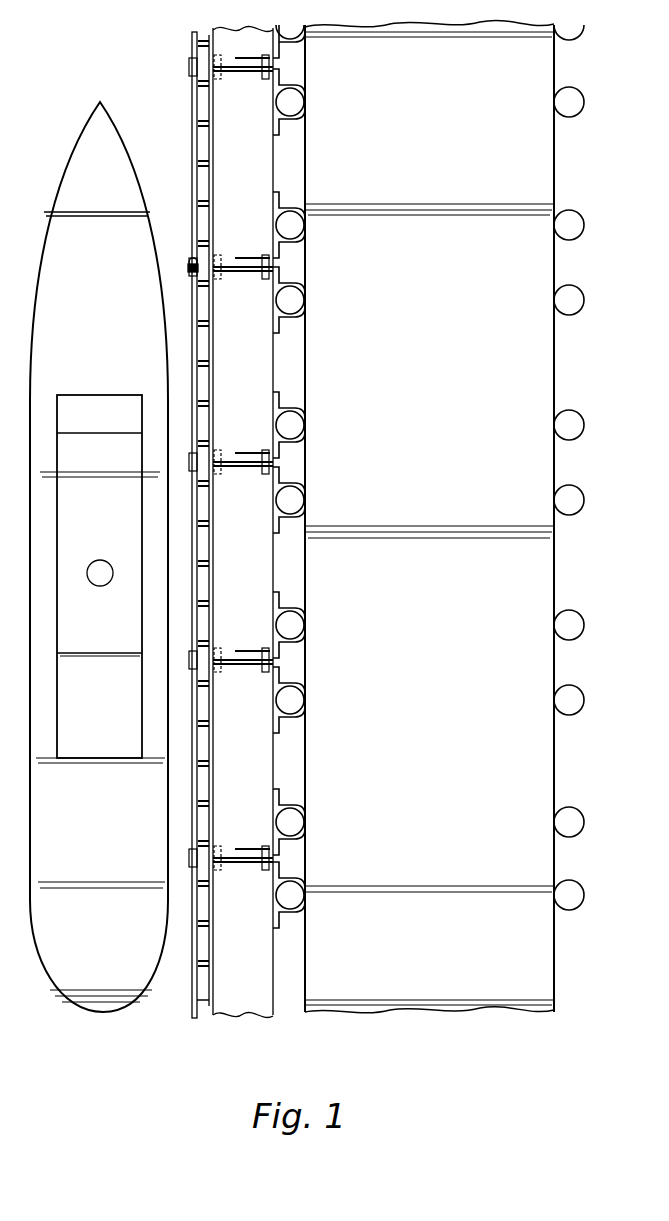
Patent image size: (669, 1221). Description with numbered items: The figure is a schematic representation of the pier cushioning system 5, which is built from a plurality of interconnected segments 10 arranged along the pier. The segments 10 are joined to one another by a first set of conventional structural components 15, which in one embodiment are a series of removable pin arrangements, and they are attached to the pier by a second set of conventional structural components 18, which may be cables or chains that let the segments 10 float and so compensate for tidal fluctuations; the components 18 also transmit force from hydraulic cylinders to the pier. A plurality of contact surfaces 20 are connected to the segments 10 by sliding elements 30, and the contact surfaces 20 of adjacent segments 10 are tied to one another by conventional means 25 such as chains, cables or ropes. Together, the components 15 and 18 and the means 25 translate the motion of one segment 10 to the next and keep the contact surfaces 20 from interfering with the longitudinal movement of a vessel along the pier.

The pier cushioning system 5 is at (122, 58).
The interconnected segments 10 is at (228, 100).
The first set of conventional structural components 15 is at (188, 268).
The second set of conventional structural components 18 is at (305, 406).
The contact surfaces 20 is at (195, 118).
The conventional means 25 is at (191, 256).
The sliding elements 30 is at (200, 38).